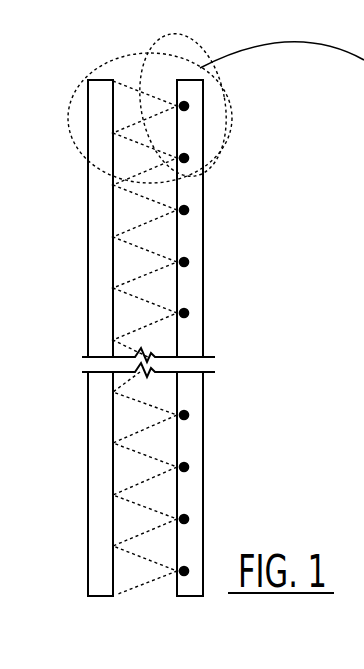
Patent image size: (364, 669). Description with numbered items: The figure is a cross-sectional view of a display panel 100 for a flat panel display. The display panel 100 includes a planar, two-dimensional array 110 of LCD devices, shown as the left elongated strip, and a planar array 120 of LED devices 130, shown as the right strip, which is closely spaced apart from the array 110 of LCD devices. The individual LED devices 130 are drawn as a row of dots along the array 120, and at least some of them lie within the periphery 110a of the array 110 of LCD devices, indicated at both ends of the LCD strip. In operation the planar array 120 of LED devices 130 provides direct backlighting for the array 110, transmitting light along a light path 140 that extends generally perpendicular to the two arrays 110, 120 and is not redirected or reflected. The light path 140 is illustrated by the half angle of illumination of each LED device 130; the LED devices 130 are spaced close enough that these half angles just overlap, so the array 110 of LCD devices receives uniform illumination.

The display panel 100 is at (88, 57).
The planar array of LCD devices 110 is at (88, 165).
The periphery of the array of LCD devices 110a is at (99, 80).
The planar array of LED devices 120 is at (203, 138).
The LED device 130 is at (188, 106).
The light path 140 is at (183, 105).